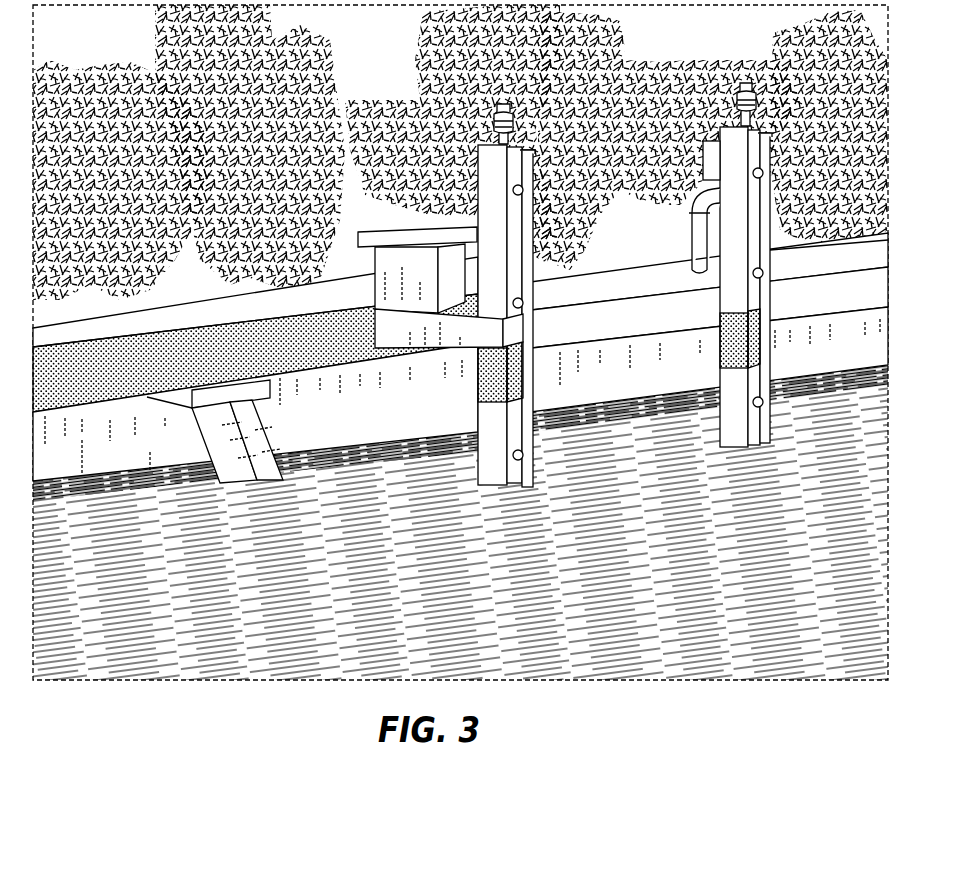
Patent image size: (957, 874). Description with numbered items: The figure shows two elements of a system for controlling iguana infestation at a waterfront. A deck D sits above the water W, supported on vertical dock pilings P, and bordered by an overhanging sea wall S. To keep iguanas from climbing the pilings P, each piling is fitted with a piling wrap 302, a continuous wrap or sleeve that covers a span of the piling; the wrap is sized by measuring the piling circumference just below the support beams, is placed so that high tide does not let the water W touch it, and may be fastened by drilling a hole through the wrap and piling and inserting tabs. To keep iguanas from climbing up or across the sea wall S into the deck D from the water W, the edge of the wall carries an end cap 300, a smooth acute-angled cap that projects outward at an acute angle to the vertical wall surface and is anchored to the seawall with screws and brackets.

The end cap 300 is at (290, 355).
The piling wrap 302 is at (515, 364).
The deck D is at (207, 320).
The dock piling P is at (490, 463).
The sea wall S is at (73, 447).
The water W is at (656, 571).